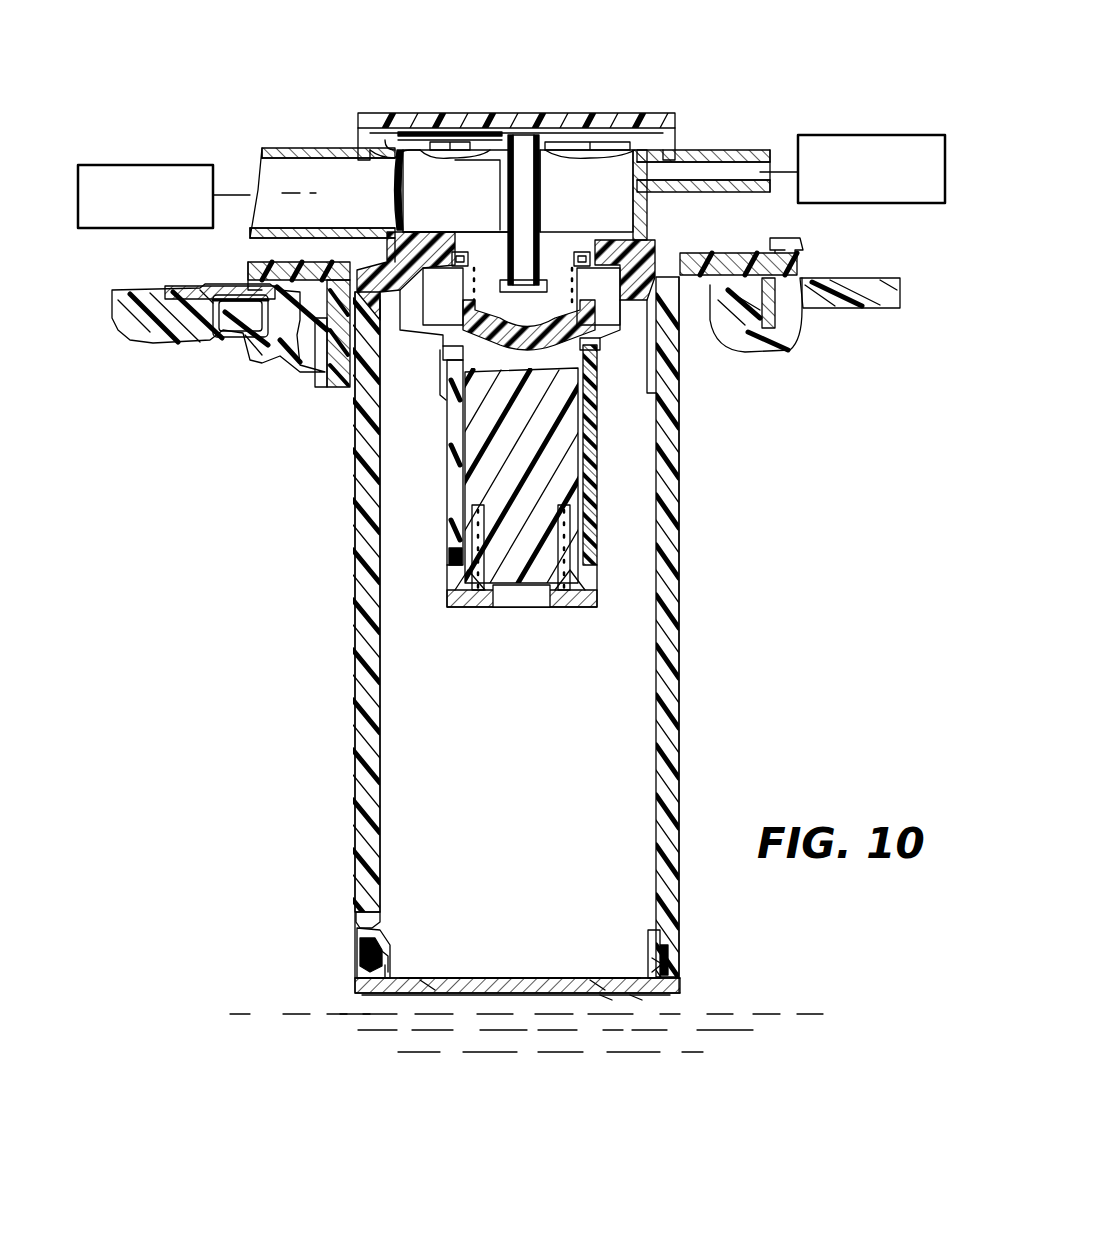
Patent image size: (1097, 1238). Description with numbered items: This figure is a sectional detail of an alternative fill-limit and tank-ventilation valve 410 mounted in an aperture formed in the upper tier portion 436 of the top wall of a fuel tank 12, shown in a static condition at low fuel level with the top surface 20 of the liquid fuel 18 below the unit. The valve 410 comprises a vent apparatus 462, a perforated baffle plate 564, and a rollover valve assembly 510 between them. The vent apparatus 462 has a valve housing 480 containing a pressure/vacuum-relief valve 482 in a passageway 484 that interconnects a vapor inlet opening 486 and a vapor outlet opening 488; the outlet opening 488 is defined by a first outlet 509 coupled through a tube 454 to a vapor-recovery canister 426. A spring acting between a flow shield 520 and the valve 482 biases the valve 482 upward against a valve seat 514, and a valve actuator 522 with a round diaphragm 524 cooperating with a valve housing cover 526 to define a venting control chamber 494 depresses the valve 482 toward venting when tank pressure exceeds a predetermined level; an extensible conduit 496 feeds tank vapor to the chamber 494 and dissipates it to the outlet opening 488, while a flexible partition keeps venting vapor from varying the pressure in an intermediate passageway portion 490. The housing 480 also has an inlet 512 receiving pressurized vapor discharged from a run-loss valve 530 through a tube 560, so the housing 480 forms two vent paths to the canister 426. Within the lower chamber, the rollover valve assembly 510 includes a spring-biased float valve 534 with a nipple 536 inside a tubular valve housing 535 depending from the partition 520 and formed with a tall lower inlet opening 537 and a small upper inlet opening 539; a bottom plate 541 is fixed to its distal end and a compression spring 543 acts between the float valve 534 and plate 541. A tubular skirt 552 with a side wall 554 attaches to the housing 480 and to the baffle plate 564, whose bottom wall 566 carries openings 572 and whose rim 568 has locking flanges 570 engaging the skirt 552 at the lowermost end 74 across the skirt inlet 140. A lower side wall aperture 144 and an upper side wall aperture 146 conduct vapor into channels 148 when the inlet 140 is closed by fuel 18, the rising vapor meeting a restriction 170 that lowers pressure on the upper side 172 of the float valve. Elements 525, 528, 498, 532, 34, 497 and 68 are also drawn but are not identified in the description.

The fill-limit and tank-ventilation valve 410 is at (712, 80).
The vent apparatus 462 is at (632, 108).
The venting control chamber 494 is at (558, 112).
The diaphragm 524 is at (405, 140).
The passageway 484 is at (462, 145).
The valve housing cover 526 is at (497, 112).
The retainer 525 is at (574, 140).
The vapor-recovery canister 426 is at (148, 165).
The tube 454 is at (232, 193).
The first outlet 509 is at (310, 148).
The vapor outlet opening 488 is at (330, 165).
The tube 560 is at (778, 150).
The run-loss valve 530 is at (552, 170).
The inlet 512 is at (718, 150).
The valve actuator 522 is at (486, 160).
The passage 528 is at (500, 198).
The extensible conduit 496 is at (508, 222).
The valve stem 498 is at (548, 196).
The vapor inlet opening 486 is at (572, 242).
The valve seat 514 is at (585, 255).
The valve housing 480 is at (650, 230).
The pressure/vacuum-relief valve 482 is at (662, 245).
The spring seat 532 is at (482, 262).
The intermediate passageway portion 490 is at (556, 298).
The upper tier portion 436 is at (175, 290).
The fuel tank 12 is at (140, 360).
The mounting plate 34 is at (322, 345).
The upper side wall aperture 146 is at (352, 405).
The flow shield 520 is at (428, 328).
The small upper inlet opening 539 is at (444, 400).
The float 497 is at (470, 360).
The nipple 536 is at (598, 348).
The outer housing upper portion 68 is at (640, 377).
The float valve 534 is at (472, 462).
The tall lower inlet opening 537 is at (446, 520).
The tubular valve housing 535 is at (595, 478).
The rollover valve assembly 510 is at (616, 522).
The skirt 552 is at (684, 612).
The compression spring 543 is at (540, 588).
The bottom plate 541 is at (560, 590).
The channels 148 is at (610, 668).
The side wall 554 is at (681, 720).
The lower side wall aperture 144 is at (383, 916).
The locking flanges 570 is at (392, 958).
The restriction 170 is at (522, 978).
The upper side 172 is at (430, 978).
The skirt inlet 140 is at (380, 968).
The lowermost end 74 is at (665, 945).
The rim 568 is at (665, 962).
The liquid fuel 18 is at (680, 1030).
The top surface 20 is at (298, 1014).
The baffle plate 564 is at (365, 1012).
The bottom wall 566 is at (462, 997).
The openings 572 is at (595, 997).